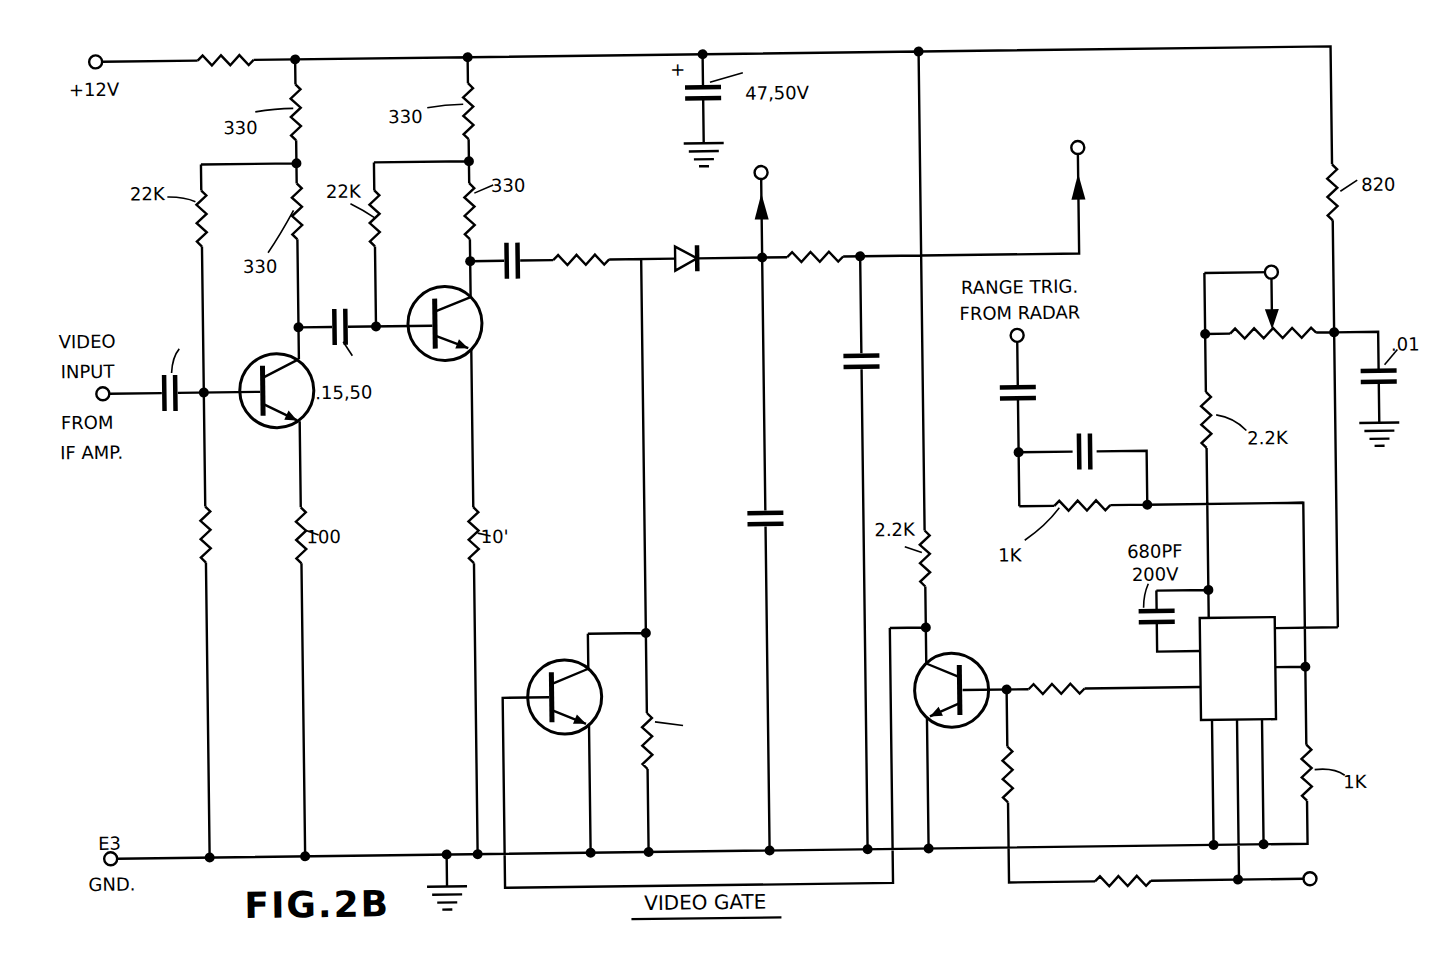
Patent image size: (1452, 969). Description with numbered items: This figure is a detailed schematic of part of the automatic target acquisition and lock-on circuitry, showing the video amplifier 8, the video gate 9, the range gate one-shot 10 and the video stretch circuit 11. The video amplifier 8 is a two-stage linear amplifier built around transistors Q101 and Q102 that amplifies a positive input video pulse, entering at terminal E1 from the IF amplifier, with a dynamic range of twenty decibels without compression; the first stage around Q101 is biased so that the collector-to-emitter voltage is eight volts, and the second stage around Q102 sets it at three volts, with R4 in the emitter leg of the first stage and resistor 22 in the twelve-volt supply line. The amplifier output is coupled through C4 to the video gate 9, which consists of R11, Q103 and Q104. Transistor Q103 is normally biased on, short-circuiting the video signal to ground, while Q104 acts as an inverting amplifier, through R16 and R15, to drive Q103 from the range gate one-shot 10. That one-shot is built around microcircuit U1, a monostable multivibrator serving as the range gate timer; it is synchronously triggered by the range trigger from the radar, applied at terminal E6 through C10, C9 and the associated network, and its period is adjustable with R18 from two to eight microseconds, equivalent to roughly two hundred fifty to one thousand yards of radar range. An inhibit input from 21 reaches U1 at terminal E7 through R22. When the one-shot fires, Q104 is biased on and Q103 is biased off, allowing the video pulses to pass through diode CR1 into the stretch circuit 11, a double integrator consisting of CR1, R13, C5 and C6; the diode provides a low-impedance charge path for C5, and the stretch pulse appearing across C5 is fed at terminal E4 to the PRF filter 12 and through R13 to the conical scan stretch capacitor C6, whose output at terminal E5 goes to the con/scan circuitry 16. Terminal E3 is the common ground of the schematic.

The video amplifier 8 is at (436, 457).
The video gate 9 is at (618, 672).
The range gate one-shot 10 is at (1182, 695).
The video stretch circuit 11 is at (690, 408).
The PRF filter 12 is at (815, 147).
The con/scan signal destination 16 is at (1079, 122).
The inhibit source in A1 21 is at (1318, 878).
The resistor 22 is at (242, 50).
The first stage transistor Q101 is at (266, 422).
The second stage transistor Q102 is at (478, 346).
The gate transistor Q103 is at (546, 664).
The inverting amplifier transistor Q104 is at (964, 664).
The coupling capacitor C4 is at (519, 279).
The stretch capacitor C5 is at (755, 530).
The conical scan stretch capacitor C6 is at (847, 377).
The capacitor C9 is at (1089, 436).
The capacitor C10 is at (1002, 387).
The diode CR1 is at (700, 244).
The resistor R4 3.3K R4 is at (203, 528).
The resistor R11 is at (583, 248).
The resistor R13 is at (818, 243).
The resistor R15 15K R15 is at (1011, 792).
The resistor R16 4.7K R16 is at (1050, 701).
The adjustment potentiometer R18 is at (1296, 347).
The resistor R22 22K R22 is at (1133, 895).
The microcircuit U1 is at (1238, 668).
The video input terminal E1 is at (87, 394).
The ground terminal E3 is at (110, 858).
The PRF signal terminal E4 is at (775, 172).
The con/scan signal terminal E5 is at (1092, 147).
The range trigger terminal E6 is at (1031, 336).
The inhibit terminal E7 is at (1325, 880).